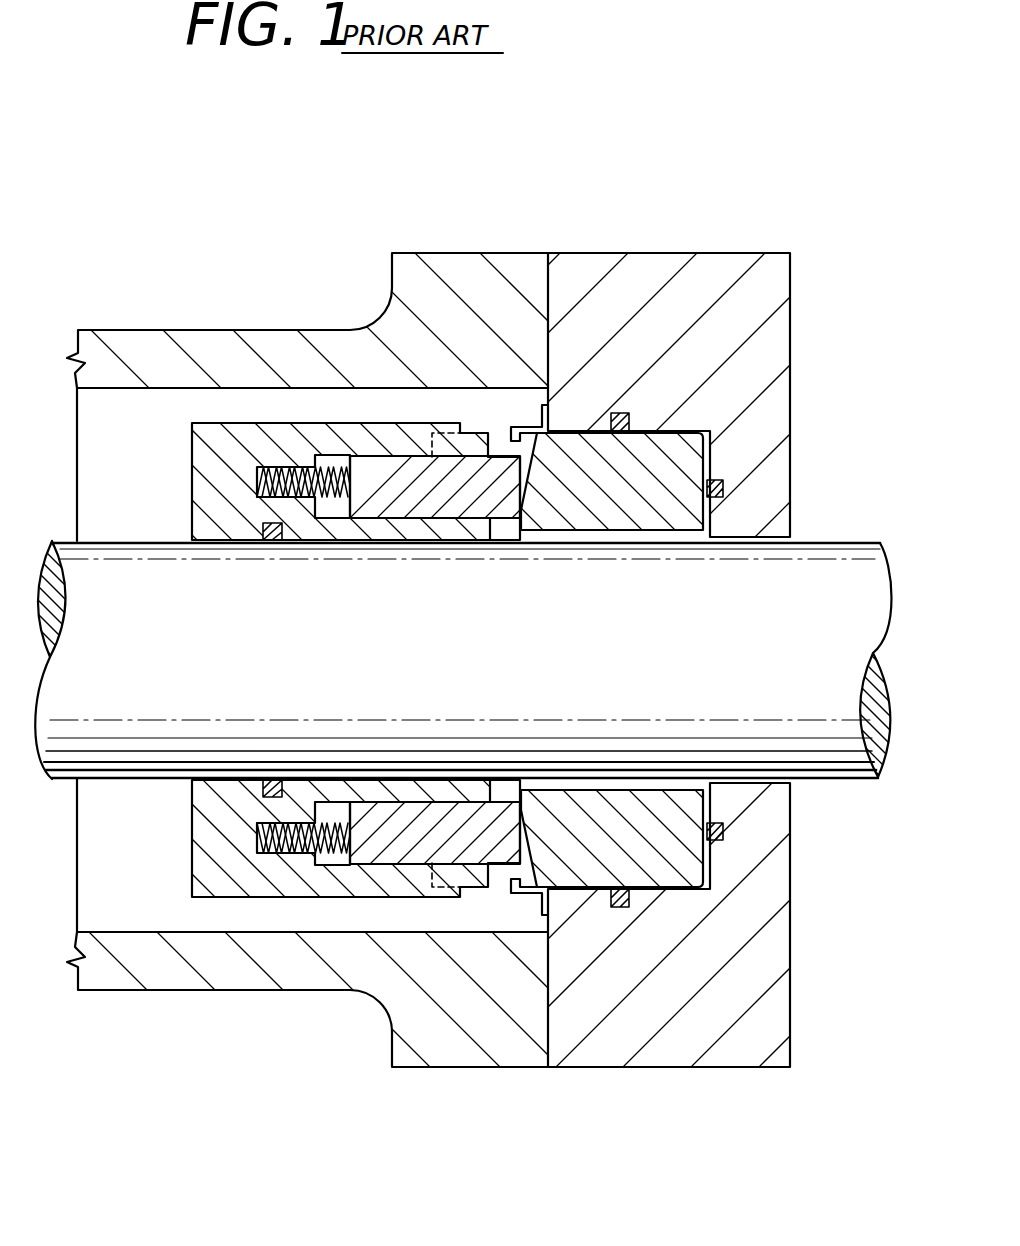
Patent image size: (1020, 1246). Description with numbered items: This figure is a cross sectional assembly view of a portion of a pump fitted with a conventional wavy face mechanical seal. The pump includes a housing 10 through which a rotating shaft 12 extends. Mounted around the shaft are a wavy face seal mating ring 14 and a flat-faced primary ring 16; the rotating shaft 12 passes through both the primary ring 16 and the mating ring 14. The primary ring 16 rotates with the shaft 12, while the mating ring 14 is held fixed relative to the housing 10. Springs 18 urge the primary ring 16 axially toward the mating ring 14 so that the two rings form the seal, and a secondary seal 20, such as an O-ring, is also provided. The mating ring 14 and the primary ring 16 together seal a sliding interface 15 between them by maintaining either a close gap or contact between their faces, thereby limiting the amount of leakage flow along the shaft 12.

The housing 10 is at (257, 342).
The rotating shaft 12 is at (833, 580).
The wavy face seal mating ring 14 is at (690, 475).
The sliding interface 15 is at (518, 487).
The flat-faced primary ring 16 is at (398, 468).
The springs 18 is at (256, 470).
The secondary seal 20 is at (347, 933).